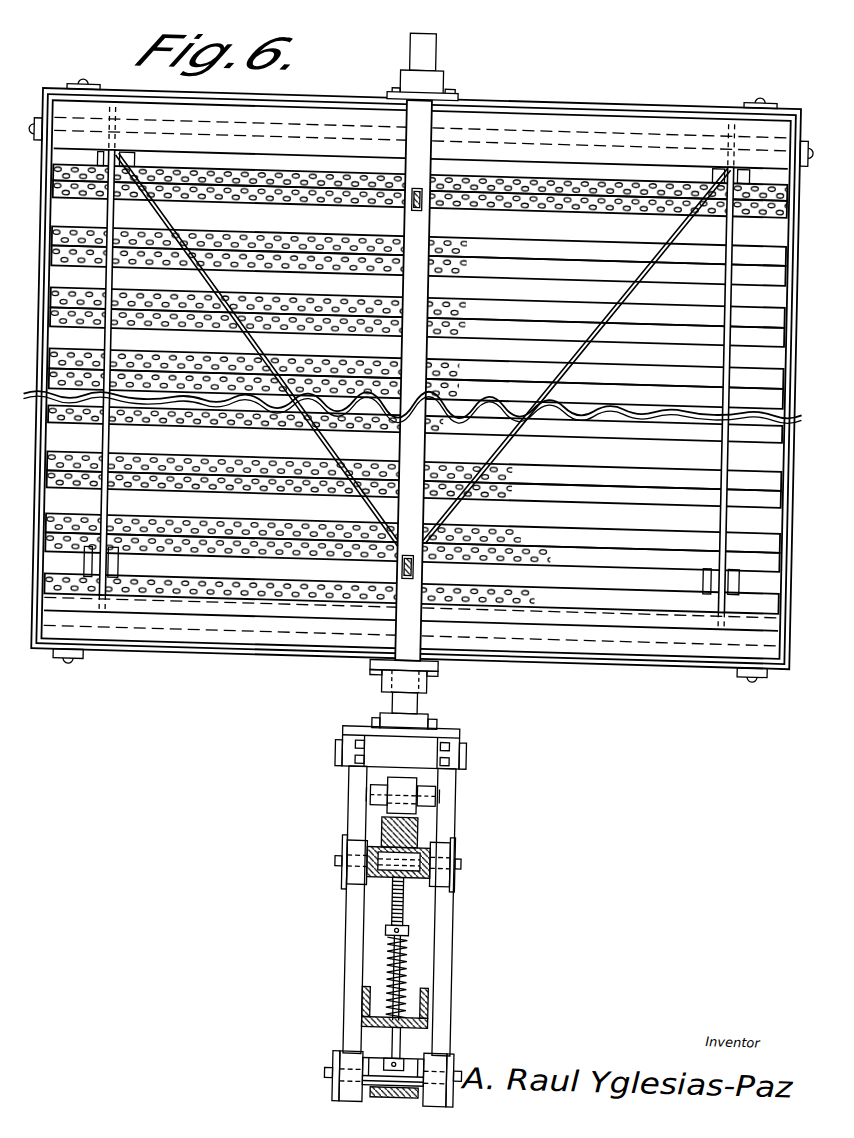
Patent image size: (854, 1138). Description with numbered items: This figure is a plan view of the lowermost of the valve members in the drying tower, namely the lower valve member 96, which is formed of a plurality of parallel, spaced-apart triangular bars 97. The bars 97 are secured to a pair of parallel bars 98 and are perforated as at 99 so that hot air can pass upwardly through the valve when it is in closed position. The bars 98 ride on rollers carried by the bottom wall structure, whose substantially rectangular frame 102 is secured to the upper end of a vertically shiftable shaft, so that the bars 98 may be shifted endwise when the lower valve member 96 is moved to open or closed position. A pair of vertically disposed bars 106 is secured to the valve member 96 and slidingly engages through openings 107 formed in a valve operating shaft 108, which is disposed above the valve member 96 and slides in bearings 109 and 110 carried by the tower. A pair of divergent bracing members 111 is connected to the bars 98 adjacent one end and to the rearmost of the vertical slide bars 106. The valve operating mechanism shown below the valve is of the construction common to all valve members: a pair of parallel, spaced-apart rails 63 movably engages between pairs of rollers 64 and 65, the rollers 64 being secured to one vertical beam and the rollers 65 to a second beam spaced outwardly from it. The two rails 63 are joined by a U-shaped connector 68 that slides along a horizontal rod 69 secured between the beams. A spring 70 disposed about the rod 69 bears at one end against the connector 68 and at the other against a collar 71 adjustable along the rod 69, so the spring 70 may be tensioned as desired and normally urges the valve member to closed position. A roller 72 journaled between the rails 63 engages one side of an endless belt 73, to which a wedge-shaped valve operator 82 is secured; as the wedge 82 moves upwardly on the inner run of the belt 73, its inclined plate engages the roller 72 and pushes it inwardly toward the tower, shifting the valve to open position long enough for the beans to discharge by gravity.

The rails 63 is at (470, 916).
The rollers 64 is at (361, 846).
The rollers 65 is at (370, 1051).
The U-shaped connector 68 is at (439, 999).
The horizontal rod 69 is at (409, 895).
The spring 70 is at (425, 952).
The collar 71 is at (403, 920).
The roller 72 is at (450, 774).
The endless belt 73 is at (443, 836).
The wedge shaped valve operator 82 is at (433, 824).
The lower valve member 96 is at (704, 324).
The triangular bars 97 is at (650, 415).
The parallel bars 98 is at (729, 494).
The perforations 99 is at (544, 586).
The rectangular frame 102 is at (791, 432).
The vertically disposed bars 106 is at (411, 558).
The openings 107 is at (434, 557).
The valve operating shaft 108 is at (433, 435).
The bearing 109 is at (443, 69).
The bearing 110 is at (440, 673).
The divergent bracing members 111 is at (207, 274).